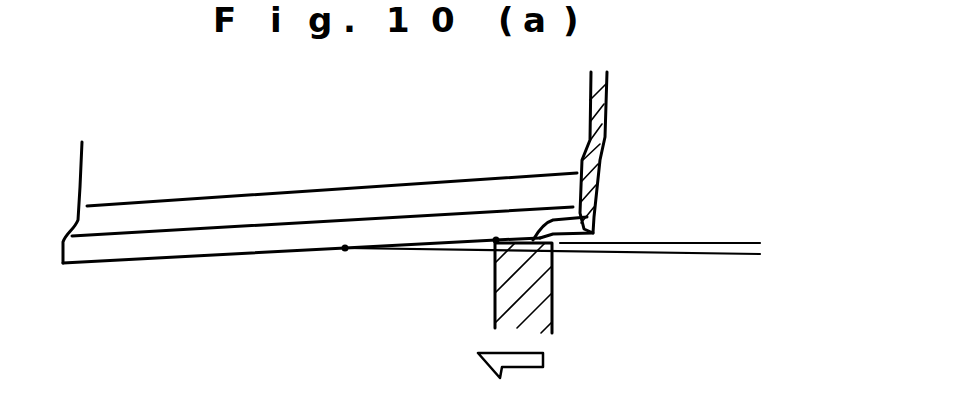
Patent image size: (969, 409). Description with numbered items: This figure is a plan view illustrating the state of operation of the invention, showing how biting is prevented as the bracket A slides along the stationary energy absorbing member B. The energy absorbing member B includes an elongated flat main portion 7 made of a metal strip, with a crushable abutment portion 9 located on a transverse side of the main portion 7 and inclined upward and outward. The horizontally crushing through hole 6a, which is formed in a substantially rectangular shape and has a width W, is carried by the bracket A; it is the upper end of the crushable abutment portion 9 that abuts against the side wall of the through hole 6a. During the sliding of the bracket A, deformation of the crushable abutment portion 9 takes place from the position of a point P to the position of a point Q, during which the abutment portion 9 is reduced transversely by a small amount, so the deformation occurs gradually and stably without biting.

The elongated flat main portion 7 is at (230, 177).
The horizontally crushing through hole 6a is at (590, 217).
The crushable abutment portion 9 is at (202, 241).
The point P is at (496, 240).
The point Q is at (345, 248).
The energy absorbing member B is at (136, 262).
The bracket A is at (552, 297).
The width W is at (738, 285).